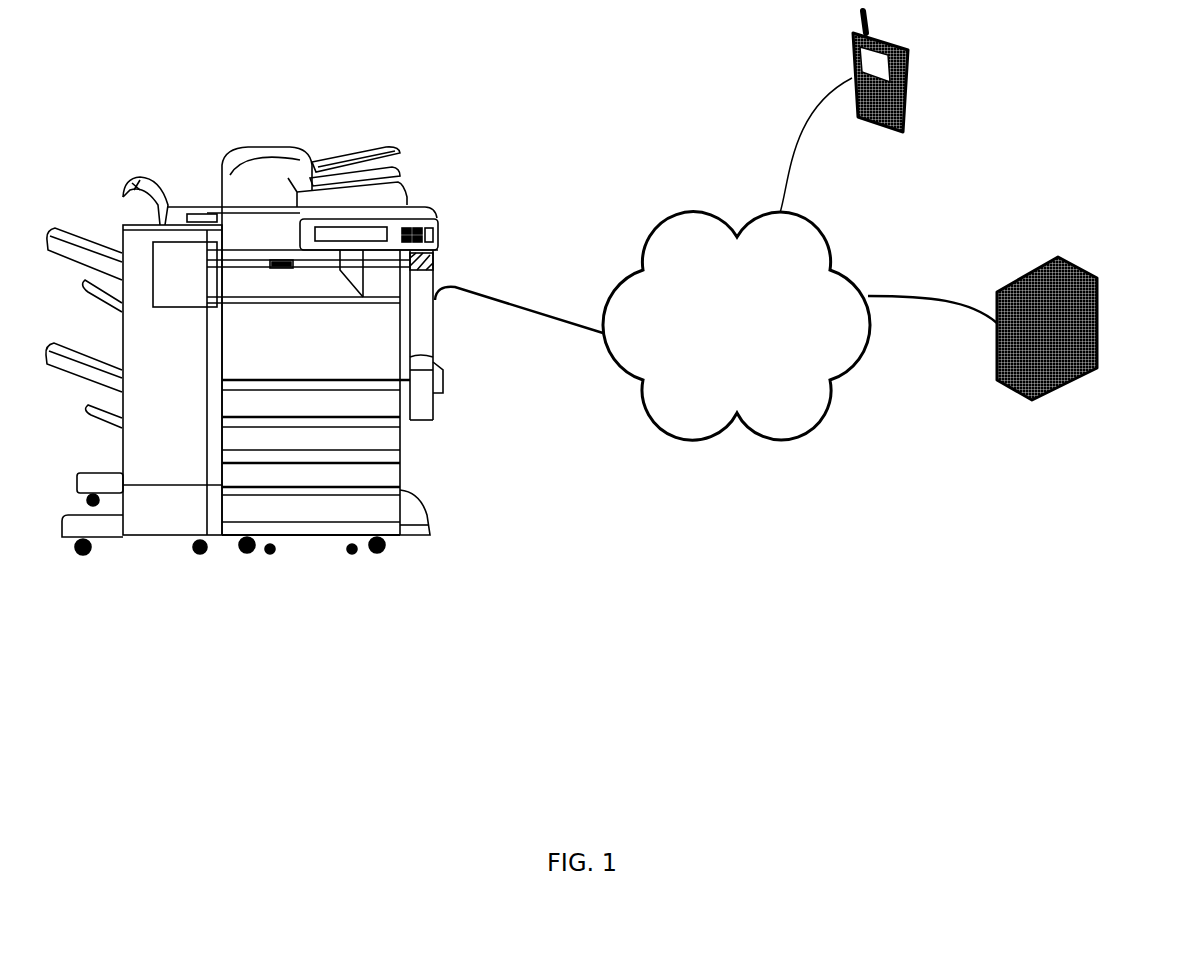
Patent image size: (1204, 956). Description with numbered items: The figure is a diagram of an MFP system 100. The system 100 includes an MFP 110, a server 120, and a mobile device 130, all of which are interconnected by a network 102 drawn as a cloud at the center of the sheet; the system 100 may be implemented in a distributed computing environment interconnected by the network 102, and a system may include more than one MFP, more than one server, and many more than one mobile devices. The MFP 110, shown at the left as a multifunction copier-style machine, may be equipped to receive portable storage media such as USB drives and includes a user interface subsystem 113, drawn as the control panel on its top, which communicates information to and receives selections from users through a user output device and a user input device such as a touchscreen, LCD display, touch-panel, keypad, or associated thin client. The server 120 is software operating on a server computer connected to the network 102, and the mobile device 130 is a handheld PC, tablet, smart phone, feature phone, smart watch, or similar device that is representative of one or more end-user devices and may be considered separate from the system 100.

The MFP system 100 is at (663, 83).
The network 102 is at (736, 326).
The MFP 110 is at (337, 153).
The user interface subsystem 113 is at (380, 230).
The server 120 is at (1097, 283).
The mobile device 130 is at (912, 78).